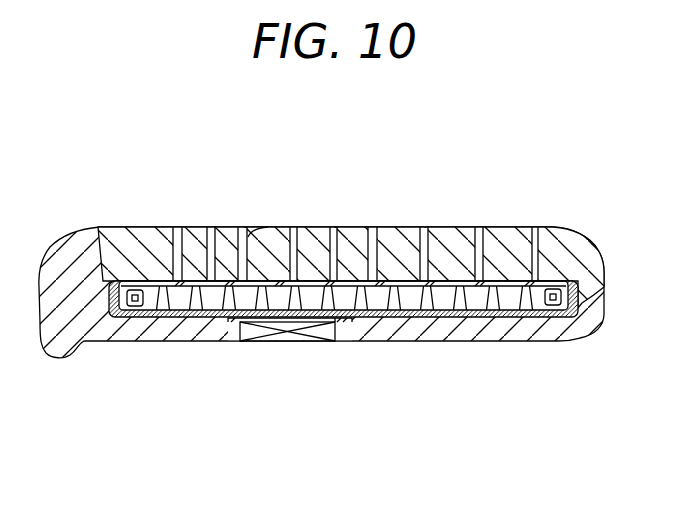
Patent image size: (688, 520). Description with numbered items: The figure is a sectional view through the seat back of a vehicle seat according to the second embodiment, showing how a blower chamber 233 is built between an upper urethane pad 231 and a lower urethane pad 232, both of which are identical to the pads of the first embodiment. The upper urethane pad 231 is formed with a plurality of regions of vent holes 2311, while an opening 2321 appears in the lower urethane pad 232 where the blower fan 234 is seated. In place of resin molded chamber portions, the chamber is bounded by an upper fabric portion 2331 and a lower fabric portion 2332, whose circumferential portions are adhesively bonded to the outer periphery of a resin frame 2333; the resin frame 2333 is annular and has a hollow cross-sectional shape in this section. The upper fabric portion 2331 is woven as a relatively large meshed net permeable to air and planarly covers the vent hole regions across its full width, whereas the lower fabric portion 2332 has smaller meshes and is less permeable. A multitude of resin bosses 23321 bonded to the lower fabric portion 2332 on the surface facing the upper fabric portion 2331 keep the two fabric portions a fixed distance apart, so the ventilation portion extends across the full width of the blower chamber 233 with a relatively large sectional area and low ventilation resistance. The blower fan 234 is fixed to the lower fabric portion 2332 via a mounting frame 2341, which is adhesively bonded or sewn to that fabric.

The upper urethane pad 231 is at (351, 233).
The vent holes 2311 is at (483, 253).
The lower urethane pad 232 is at (123, 343).
The recess 2321 is at (230, 343).
The blower chamber 233 is at (369, 380).
The upper fabric portion 2331 is at (500, 298).
The lower fabric portion 2332 is at (343, 359).
The resin bosses 23321 is at (425, 299).
The resin frame 2333 is at (372, 349).
The blower fan 234 is at (288, 363).
The mounting frame 2341 is at (336, 341).